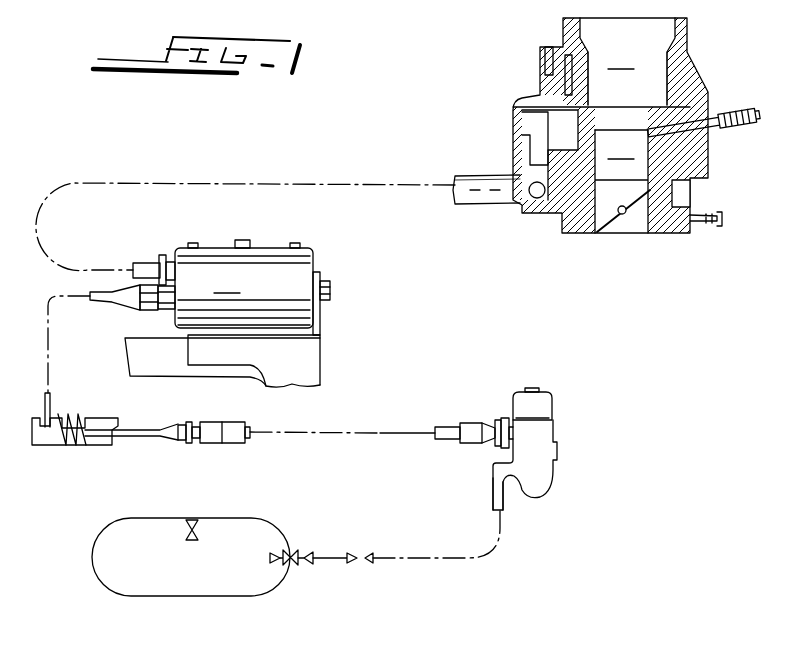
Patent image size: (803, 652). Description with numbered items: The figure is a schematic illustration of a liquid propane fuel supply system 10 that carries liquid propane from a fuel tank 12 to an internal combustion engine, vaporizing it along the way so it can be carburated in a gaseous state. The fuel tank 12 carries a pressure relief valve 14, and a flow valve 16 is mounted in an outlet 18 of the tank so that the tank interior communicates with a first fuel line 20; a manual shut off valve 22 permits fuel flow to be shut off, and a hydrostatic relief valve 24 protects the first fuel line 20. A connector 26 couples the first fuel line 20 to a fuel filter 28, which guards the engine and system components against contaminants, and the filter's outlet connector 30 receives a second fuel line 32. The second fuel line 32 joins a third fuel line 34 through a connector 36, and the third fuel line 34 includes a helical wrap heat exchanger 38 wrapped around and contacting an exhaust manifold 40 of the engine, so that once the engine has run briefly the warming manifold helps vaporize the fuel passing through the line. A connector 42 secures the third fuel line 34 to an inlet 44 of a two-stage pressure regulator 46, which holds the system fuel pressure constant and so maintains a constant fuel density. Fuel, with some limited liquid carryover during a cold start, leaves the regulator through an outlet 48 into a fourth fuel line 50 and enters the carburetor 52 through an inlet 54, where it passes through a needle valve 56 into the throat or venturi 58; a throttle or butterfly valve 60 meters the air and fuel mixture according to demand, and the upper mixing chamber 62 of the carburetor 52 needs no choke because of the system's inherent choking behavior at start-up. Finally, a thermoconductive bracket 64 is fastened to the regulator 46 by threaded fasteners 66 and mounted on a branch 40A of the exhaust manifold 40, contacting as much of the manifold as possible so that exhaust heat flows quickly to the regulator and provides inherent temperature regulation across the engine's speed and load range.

The liquid propane fuel supply system 10 is at (335, 267).
The fuel tank 12 is at (265, 595).
The pressure relief valve 14 is at (198, 536).
The flow valve 16 is at (272, 562).
The outlet 18 is at (290, 553).
The first fuel line 20 is at (428, 562).
The manual shut off valve 22 is at (304, 565).
The hydrostatic relief valve 24 is at (356, 555).
The connector 26 is at (492, 482).
The fuel filter 28 is at (568, 452).
The outlet connector 30 is at (497, 424).
The second fuel line 32 is at (393, 432).
The third fuel line 34 is at (138, 428).
The connector 36 is at (187, 425).
The helical wrap heat exchanger 38 is at (80, 451).
The exhaust manifold 40 is at (43, 444).
The branch 40A is at (140, 358).
The connector 42 is at (122, 297).
The inlet 44 is at (165, 309).
The two-stage pressure regulator 46 is at (244, 284).
The outlet 48 is at (163, 256).
The fourth fuel line 50 is at (313, 180).
The carburetor 52 is at (518, 70).
The inlet 54 is at (513, 193).
The needle valve 56 is at (746, 124).
The throat 58 is at (621, 181).
The throttle 60 is at (602, 234).
The upper mixing chamber 62 is at (627, 77).
The thermoconductive bracket 64 is at (307, 361).
The threaded fasteners 66 is at (332, 291).